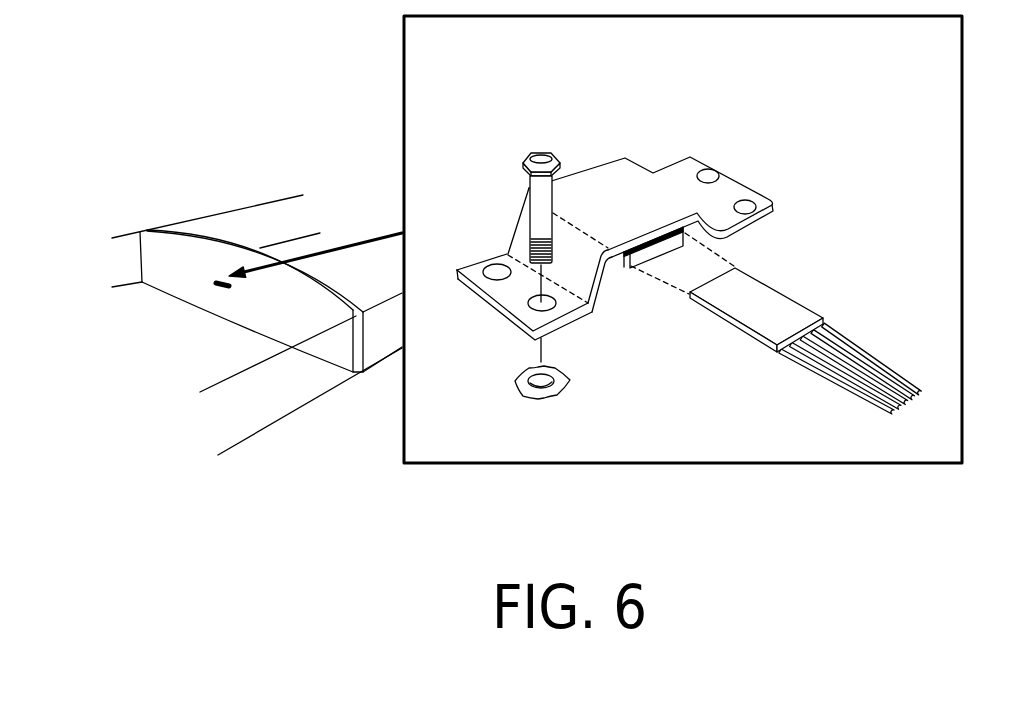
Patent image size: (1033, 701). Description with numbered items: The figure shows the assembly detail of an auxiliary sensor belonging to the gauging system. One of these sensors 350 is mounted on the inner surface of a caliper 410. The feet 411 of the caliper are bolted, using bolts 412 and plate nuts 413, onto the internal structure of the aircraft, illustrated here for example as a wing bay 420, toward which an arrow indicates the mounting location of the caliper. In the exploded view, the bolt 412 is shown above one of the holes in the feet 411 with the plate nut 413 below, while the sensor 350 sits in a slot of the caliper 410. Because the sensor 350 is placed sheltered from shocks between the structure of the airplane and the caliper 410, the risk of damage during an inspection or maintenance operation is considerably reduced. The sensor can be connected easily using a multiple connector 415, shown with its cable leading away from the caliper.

The wing bay 420 is at (210, 240).
The caliper 410 is at (617, 170).
The feet 411 is at (508, 257).
The bolt 412 is at (552, 150).
The plate nut 413 is at (572, 380).
The multiple connector 415 is at (780, 308).
The sensor 350 is at (620, 267).